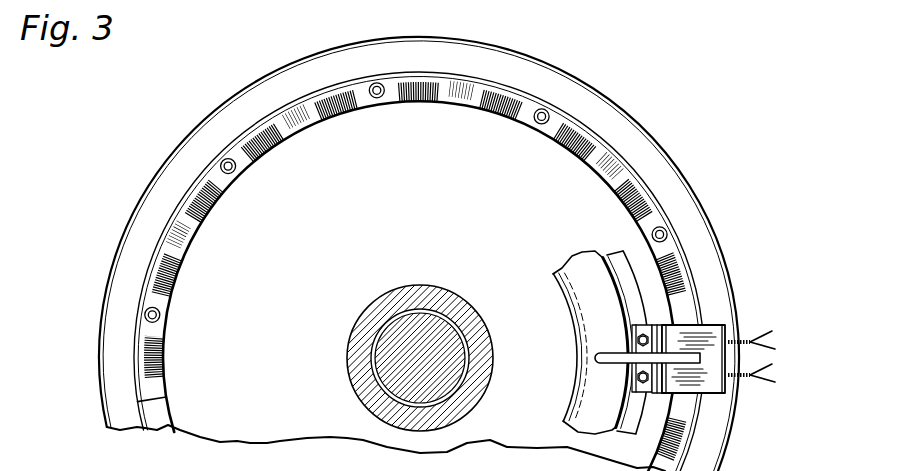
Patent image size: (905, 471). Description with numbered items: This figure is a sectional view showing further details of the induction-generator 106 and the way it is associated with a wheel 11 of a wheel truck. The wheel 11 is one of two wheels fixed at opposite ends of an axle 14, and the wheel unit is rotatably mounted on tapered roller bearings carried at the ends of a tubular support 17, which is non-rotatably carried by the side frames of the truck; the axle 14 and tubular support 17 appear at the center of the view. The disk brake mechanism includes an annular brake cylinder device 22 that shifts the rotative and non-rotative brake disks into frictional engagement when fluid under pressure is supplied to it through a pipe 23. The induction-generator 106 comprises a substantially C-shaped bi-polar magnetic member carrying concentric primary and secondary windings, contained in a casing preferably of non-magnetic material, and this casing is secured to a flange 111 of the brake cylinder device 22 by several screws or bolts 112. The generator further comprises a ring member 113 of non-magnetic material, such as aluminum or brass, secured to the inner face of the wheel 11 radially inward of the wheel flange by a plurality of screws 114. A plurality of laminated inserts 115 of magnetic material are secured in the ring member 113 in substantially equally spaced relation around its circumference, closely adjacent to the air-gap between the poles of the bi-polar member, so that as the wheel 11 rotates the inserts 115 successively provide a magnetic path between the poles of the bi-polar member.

The wheel 11 is at (613, 118).
The axle 14 is at (432, 327).
The tubular support 17 is at (384, 300).
The annular brake cylinder device 22 is at (594, 321).
The pipe 23 is at (695, 363).
The induction-generator 106 is at (720, 318).
The flange 111 is at (613, 255).
The screws or bolts 112 is at (643, 372).
The ring member 113 is at (548, 123).
The screws 114 is at (163, 317).
The laminated inserts 115 is at (199, 222).